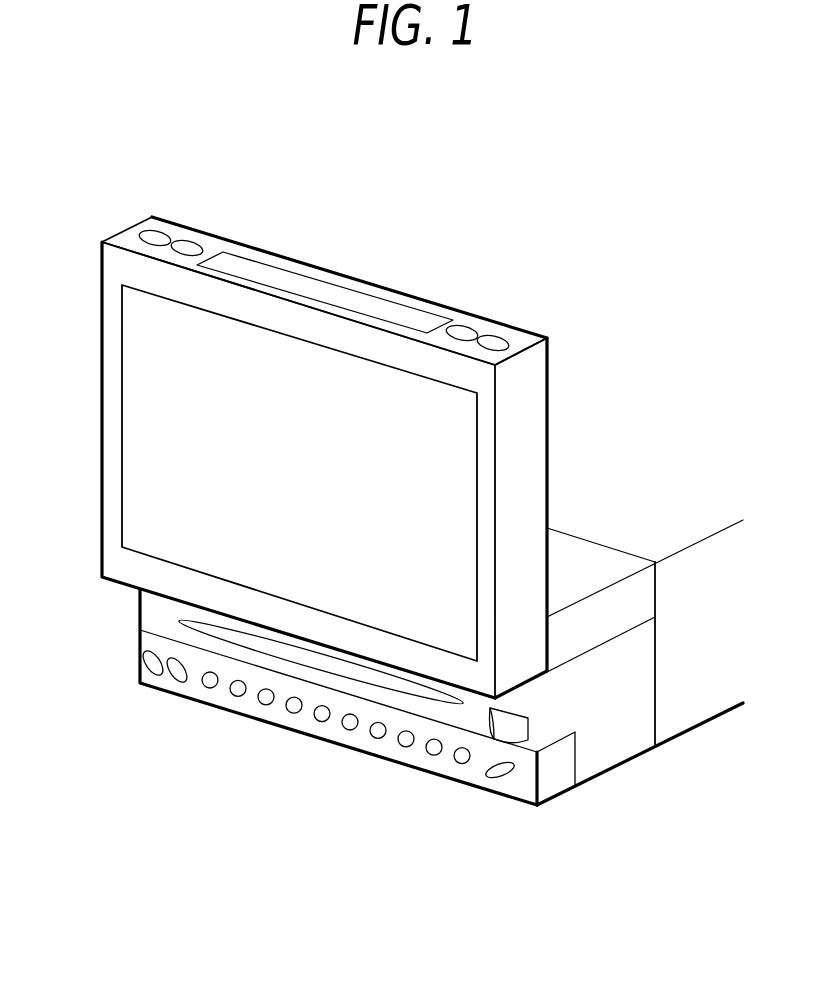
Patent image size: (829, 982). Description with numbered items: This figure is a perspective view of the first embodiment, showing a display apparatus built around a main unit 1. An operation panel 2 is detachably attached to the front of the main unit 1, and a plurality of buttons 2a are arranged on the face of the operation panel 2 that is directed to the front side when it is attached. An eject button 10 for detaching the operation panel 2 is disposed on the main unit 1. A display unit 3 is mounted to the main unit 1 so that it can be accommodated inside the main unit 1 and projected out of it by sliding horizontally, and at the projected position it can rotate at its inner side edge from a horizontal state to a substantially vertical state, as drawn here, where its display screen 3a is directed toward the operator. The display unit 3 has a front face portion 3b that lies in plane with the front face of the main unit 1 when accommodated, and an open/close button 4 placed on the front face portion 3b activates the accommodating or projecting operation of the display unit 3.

The main unit 1 is at (620, 693).
The operation panel 2 is at (553, 780).
The buttons 2a is at (462, 765).
The display unit 3 is at (522, 446).
The display screen 3a is at (160, 447).
The front face portion 3b is at (203, 230).
The open/close button 4 is at (493, 343).
The eject button 10 is at (537, 738).